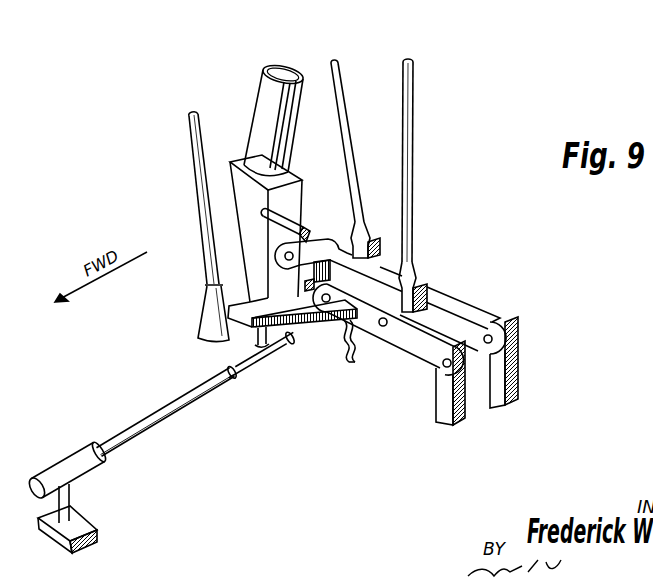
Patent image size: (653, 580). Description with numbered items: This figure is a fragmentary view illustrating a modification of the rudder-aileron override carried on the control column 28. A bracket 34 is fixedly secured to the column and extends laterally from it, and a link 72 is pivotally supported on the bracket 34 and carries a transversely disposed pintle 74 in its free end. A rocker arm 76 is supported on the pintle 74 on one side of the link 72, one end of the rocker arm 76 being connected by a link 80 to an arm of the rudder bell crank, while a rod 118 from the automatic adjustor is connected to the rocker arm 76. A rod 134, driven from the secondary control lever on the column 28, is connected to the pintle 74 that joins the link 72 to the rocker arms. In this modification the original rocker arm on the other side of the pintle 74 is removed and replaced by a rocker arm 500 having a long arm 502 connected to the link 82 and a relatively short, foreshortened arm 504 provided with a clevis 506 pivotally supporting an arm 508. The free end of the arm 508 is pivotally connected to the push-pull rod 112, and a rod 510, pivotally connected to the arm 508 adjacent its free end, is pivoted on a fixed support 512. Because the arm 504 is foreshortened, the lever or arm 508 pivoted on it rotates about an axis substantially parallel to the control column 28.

The column 28 is at (263, 111).
The bracket 34 is at (296, 232).
The link 72 is at (348, 236).
The pintle 74 is at (388, 325).
The rocker arm 76 is at (453, 299).
The link 80 is at (521, 381).
The link 82 is at (440, 412).
The push-pull rod 112 is at (199, 180).
The rod 118 is at (337, 74).
The rod 134 is at (414, 109).
The rocker arm 500 is at (406, 347).
The long arm 502 is at (430, 364).
The short arm 504 is at (360, 318).
The clevis 506 is at (318, 322).
The arm 508 is at (252, 330).
The rod 510 is at (208, 402).
The fixed support 512 is at (77, 496).